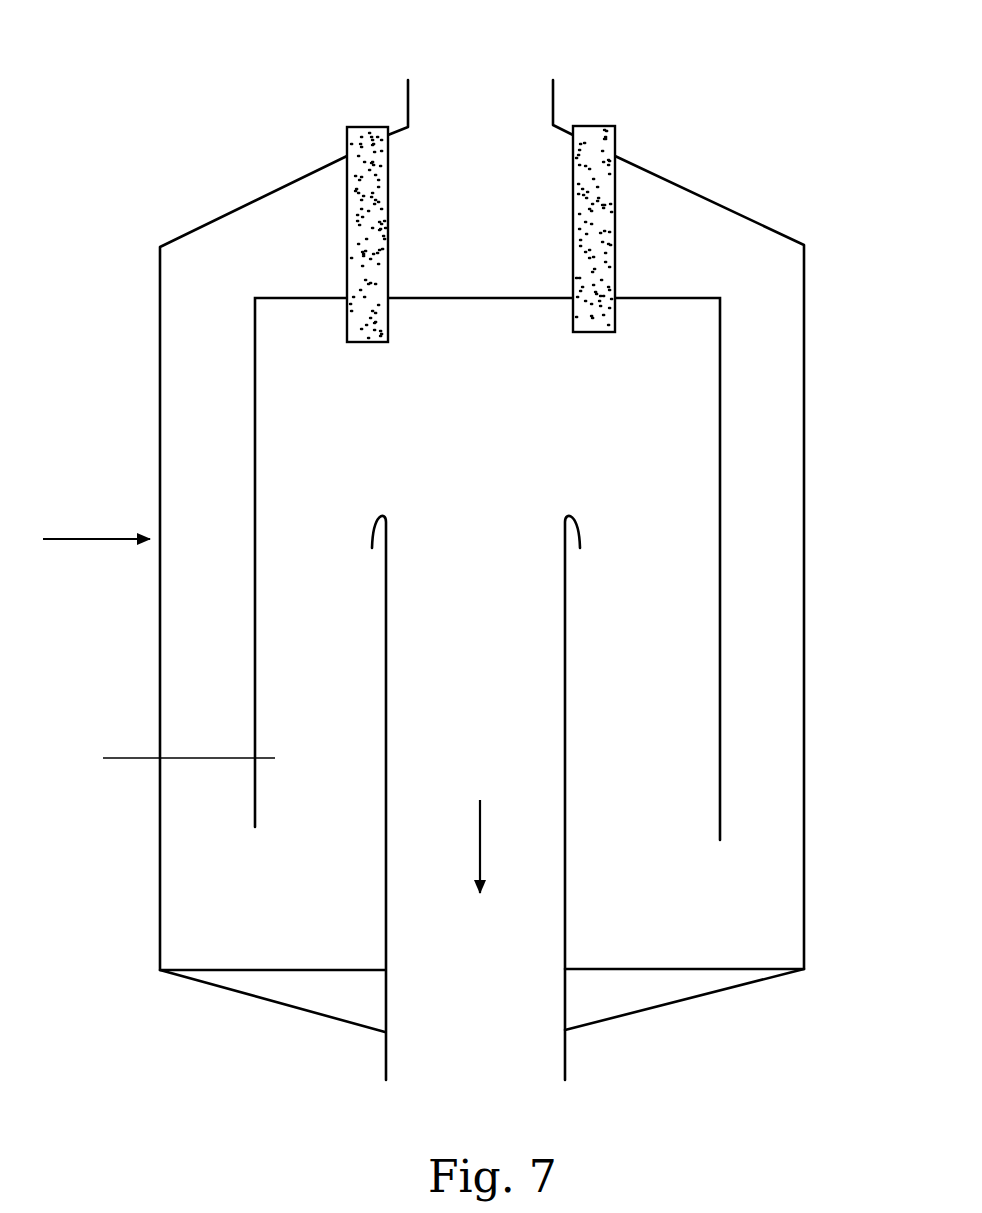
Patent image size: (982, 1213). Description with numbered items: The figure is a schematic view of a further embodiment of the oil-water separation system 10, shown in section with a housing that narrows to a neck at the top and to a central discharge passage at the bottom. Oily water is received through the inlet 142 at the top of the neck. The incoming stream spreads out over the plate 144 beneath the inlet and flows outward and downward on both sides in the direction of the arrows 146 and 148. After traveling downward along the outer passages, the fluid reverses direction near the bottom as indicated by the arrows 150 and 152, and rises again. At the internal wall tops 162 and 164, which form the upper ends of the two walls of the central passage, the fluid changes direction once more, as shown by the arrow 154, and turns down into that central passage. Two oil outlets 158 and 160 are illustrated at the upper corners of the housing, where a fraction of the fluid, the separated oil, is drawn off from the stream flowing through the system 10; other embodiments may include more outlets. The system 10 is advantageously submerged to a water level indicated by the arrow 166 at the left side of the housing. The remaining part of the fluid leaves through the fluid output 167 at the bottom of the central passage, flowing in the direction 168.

The system 10 is at (186, 170).
The inlet 142 is at (497, 88).
The plate 144 is at (483, 298).
The arrow 146 is at (204, 350).
The arrow 148 is at (762, 340).
The arrow 150 is at (513, 530).
The arrow 152 is at (769, 840).
The arrow 154 is at (439, 525).
The oil outlet 158 is at (370, 322).
The oil outlet 160 is at (592, 300).
The internal wall top 162 is at (372, 548).
The internal wall top 164 is at (580, 548).
The arrow 166 is at (100, 537).
The fluid output 167 is at (518, 1071).
The direction 168 is at (524, 823).